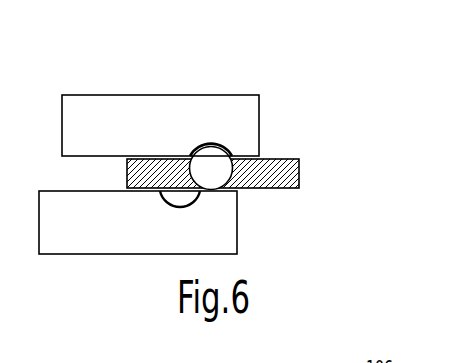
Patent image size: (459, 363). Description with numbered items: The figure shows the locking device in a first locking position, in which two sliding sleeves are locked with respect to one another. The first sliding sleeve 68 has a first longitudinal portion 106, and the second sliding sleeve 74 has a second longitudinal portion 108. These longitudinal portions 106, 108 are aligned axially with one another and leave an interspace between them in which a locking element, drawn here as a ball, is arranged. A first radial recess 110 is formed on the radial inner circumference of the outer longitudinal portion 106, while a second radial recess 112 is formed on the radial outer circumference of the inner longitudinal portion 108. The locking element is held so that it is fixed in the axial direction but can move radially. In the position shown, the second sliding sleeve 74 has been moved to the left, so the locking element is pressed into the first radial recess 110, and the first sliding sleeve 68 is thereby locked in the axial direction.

The first longitudinal portion 106 is at (222, 86).
The first sliding sleeve 68 is at (242, 120).
The first radial recess 110 is at (203, 143).
The second longitudinal portion 108 is at (228, 222).
The second sliding sleeve 74 is at (222, 226).
The second radial recess 112 is at (182, 207).